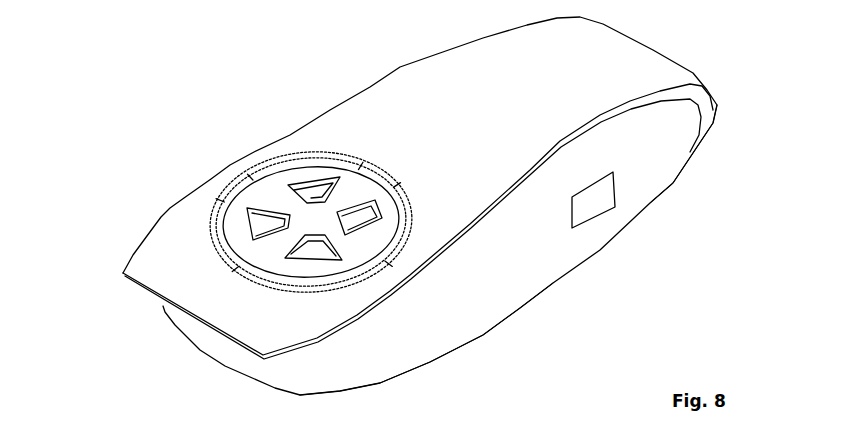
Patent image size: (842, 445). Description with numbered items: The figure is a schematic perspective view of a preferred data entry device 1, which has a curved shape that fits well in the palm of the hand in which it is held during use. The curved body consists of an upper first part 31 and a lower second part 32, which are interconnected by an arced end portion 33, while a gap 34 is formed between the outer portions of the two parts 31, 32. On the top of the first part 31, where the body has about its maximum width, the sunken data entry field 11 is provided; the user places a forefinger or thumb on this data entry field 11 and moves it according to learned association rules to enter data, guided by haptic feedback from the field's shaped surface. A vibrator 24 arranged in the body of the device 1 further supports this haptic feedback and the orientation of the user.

The data entry device 1 is at (152, 318).
The data entry field 11 is at (350, 184).
The vibrator 24 is at (615, 194).
The first part 31 is at (300, 128).
The second part 32 is at (557, 284).
The arced end portion 33 is at (697, 158).
The gap 34 is at (355, 354).